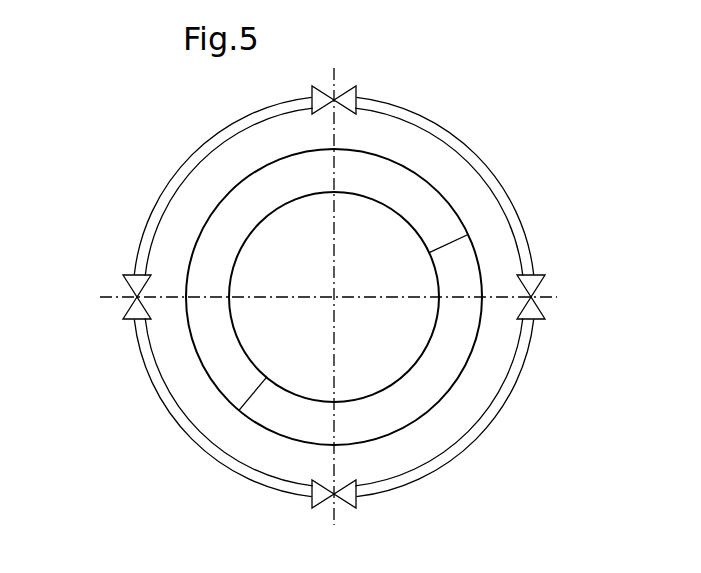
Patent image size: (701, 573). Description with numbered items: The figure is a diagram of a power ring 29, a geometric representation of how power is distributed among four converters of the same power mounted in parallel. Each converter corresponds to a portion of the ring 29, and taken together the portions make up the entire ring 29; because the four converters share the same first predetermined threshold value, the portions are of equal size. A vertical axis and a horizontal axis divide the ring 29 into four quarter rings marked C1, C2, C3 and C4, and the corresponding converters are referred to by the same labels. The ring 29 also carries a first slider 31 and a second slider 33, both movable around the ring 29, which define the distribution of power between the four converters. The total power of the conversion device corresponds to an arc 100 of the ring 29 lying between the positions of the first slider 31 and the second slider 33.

The power ring 29 is at (165, 242).
The first slider 31 is at (247, 402).
The second slider 33 is at (447, 244).
The arc 100 is at (442, 377).
The quarter ring C1 is at (482, 157).
The quarter ring C2 is at (530, 362).
The quarter ring C3 is at (192, 440).
The quarter ring C4 is at (210, 139).